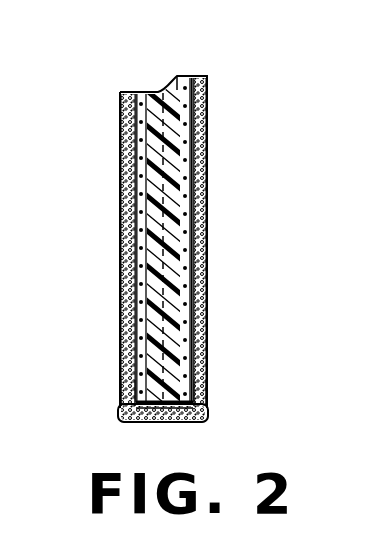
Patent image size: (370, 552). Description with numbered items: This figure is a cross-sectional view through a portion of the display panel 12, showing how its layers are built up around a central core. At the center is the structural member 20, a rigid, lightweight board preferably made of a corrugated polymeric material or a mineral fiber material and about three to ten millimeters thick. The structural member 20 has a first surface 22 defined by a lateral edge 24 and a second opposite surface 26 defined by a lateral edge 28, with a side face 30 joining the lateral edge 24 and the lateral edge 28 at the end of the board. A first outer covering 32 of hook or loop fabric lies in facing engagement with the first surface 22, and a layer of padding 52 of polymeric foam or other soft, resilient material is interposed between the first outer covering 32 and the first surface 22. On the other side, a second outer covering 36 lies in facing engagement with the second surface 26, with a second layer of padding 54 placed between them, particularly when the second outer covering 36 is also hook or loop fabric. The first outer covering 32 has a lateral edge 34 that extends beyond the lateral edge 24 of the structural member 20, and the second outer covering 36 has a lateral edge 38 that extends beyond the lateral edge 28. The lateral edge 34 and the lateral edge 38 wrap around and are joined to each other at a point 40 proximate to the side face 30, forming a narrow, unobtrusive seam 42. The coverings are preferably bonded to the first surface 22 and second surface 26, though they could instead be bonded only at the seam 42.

The display panel 12 is at (172, 96).
The structural member 20 is at (200, 90).
The first surface 22 is at (206, 133).
The second opposite surface 26 is at (124, 303).
The second outer covering 36 is at (124, 217).
The second layer of padding 54 is at (138, 258).
The first outer covering 32 is at (203, 203).
The layer of padding 52 is at (203, 262).
The seam 42 is at (203, 295).
The lateral edge 28 is at (133, 385).
The lateral edge 24 is at (200, 386).
The side face 30 is at (143, 413).
The point 40 is at (170, 413).
The lateral edge 38 is at (128, 416).
The lateral edge 34 is at (190, 416).